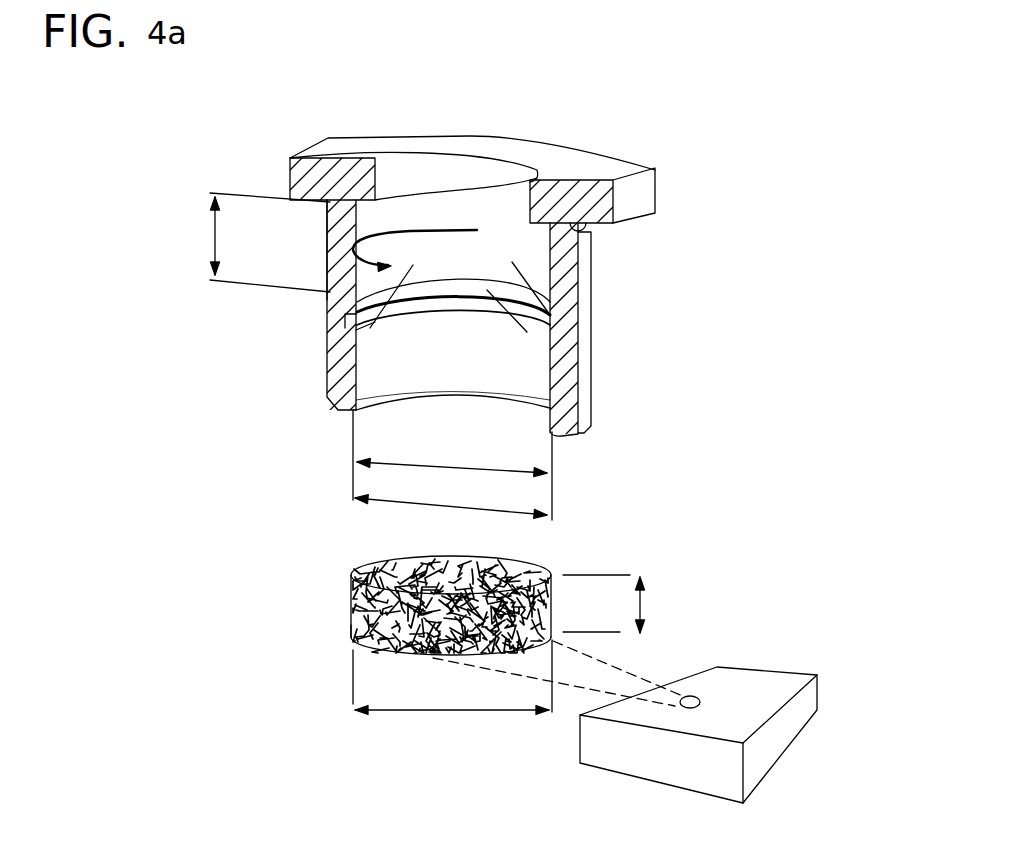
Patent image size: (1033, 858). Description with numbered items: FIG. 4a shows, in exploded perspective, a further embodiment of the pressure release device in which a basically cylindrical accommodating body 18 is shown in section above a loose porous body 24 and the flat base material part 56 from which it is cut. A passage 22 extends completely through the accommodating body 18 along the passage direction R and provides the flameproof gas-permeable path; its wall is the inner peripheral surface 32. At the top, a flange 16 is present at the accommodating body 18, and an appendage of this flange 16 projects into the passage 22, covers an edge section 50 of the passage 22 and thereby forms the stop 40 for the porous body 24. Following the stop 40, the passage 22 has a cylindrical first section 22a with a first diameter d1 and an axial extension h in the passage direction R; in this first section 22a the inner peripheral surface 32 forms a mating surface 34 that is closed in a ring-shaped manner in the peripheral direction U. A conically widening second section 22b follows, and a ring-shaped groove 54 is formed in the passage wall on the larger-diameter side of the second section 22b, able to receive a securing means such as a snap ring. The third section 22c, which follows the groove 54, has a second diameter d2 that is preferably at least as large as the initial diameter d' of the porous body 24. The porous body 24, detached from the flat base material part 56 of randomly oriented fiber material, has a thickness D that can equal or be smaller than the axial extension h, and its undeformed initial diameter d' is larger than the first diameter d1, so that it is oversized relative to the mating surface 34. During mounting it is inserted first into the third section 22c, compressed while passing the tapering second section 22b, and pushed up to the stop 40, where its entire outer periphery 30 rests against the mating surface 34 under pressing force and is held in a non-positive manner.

The accommodating body 18 is at (598, 140).
The flange 16 is at (637, 203).
The stop 40 is at (527, 203).
The passage 22 is at (440, 215).
The first section 22a is at (337, 223).
The second section 22b is at (550, 365).
The third section 22c is at (485, 365).
The edge section 50 is at (540, 282).
The inner peripheral surface 32 is at (550, 333).
The mating surface 34 is at (375, 322).
The groove 54 is at (375, 322).
The outer periphery 30 is at (350, 604).
The porous body 24 is at (346, 644).
The flat base material part 56 is at (743, 700).
The passage direction R is at (458, 185).
The peripheral direction U is at (408, 236).
The axial extension h is at (209, 230).
The first diameter d1 is at (410, 456).
The second diameter d2 is at (417, 507).
The thickness D is at (648, 603).
The initial diameter d' is at (405, 739).